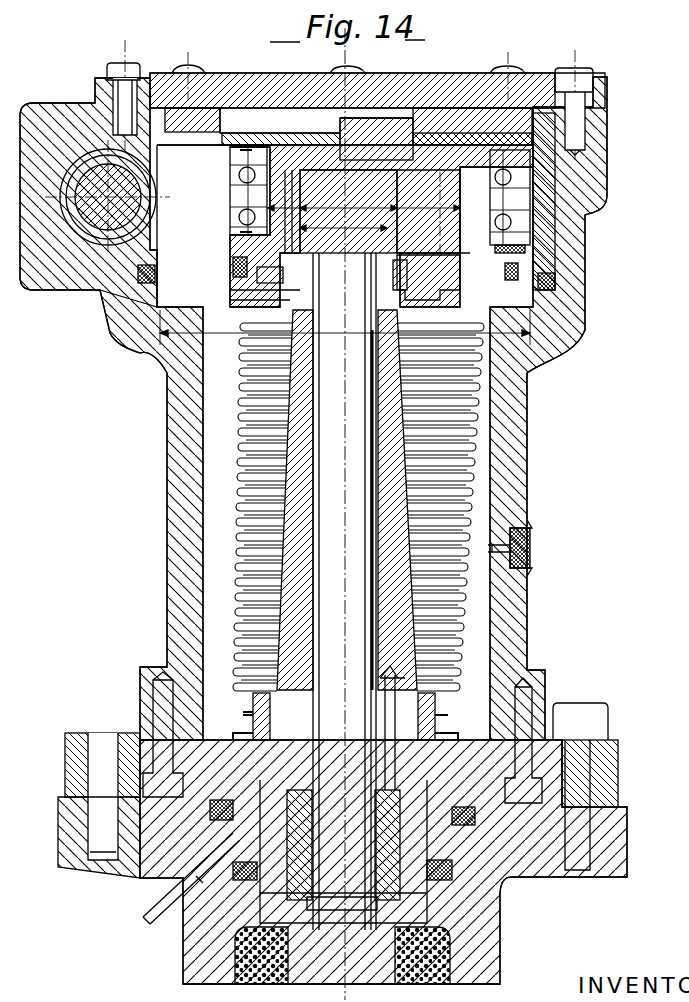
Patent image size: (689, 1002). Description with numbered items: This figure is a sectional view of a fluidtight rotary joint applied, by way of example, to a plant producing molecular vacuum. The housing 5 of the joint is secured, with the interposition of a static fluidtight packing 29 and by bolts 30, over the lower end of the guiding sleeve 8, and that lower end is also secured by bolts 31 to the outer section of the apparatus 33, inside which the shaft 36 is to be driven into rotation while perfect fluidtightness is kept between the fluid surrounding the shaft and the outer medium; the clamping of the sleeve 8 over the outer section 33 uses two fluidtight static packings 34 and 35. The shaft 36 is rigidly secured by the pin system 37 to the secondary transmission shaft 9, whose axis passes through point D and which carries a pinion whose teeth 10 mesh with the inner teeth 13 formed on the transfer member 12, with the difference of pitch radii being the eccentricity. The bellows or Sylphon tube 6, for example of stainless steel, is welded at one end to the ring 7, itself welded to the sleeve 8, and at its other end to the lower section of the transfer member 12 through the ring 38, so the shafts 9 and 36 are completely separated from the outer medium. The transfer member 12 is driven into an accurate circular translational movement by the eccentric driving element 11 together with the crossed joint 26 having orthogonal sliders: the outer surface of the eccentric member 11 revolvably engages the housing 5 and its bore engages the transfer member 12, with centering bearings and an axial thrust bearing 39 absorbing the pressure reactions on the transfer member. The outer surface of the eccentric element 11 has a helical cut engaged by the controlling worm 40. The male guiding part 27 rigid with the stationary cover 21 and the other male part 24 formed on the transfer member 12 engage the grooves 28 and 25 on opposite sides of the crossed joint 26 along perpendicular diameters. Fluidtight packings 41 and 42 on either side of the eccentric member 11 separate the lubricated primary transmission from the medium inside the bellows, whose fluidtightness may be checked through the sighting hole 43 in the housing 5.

The housing 5 is at (515, 458).
The bellows or Sylphon tube 6 is at (253, 432).
The ring 7 is at (264, 722).
The guiding sleeve 8 is at (302, 537).
The secondary transmission shaft 9 is at (332, 402).
The teeth 10 is at (404, 192).
The eccentric driving element 11 is at (190, 277).
The transfer member 12 is at (477, 218).
The inner teeth 13 is at (462, 245).
The stationary cover 21 is at (147, 90).
The male part 24 is at (393, 138).
The groove 25 is at (364, 118).
The crossed joint 26 is at (320, 141).
The male guiding part 27 is at (200, 122).
The groove 28 is at (298, 120).
The static fluidtight packing 29 is at (190, 748).
The bolts 30 is at (522, 790).
The bolts 31 is at (574, 717).
The outer section of the apparatus 33 is at (487, 928).
The fluidtight static packing 34 is at (465, 813).
The fluidtight static packing 35 is at (438, 872).
The shaft 36 is at (327, 975).
The pin system 37 is at (327, 805).
The ring 38 is at (473, 280).
The centering bearings and axial thrust bearing 39 is at (235, 182).
The controlling worm 40 is at (95, 213).
The fluidtight packing 41 is at (133, 277).
The fluidtight packing 42 is at (240, 267).
The sighting hole 43 is at (522, 548).